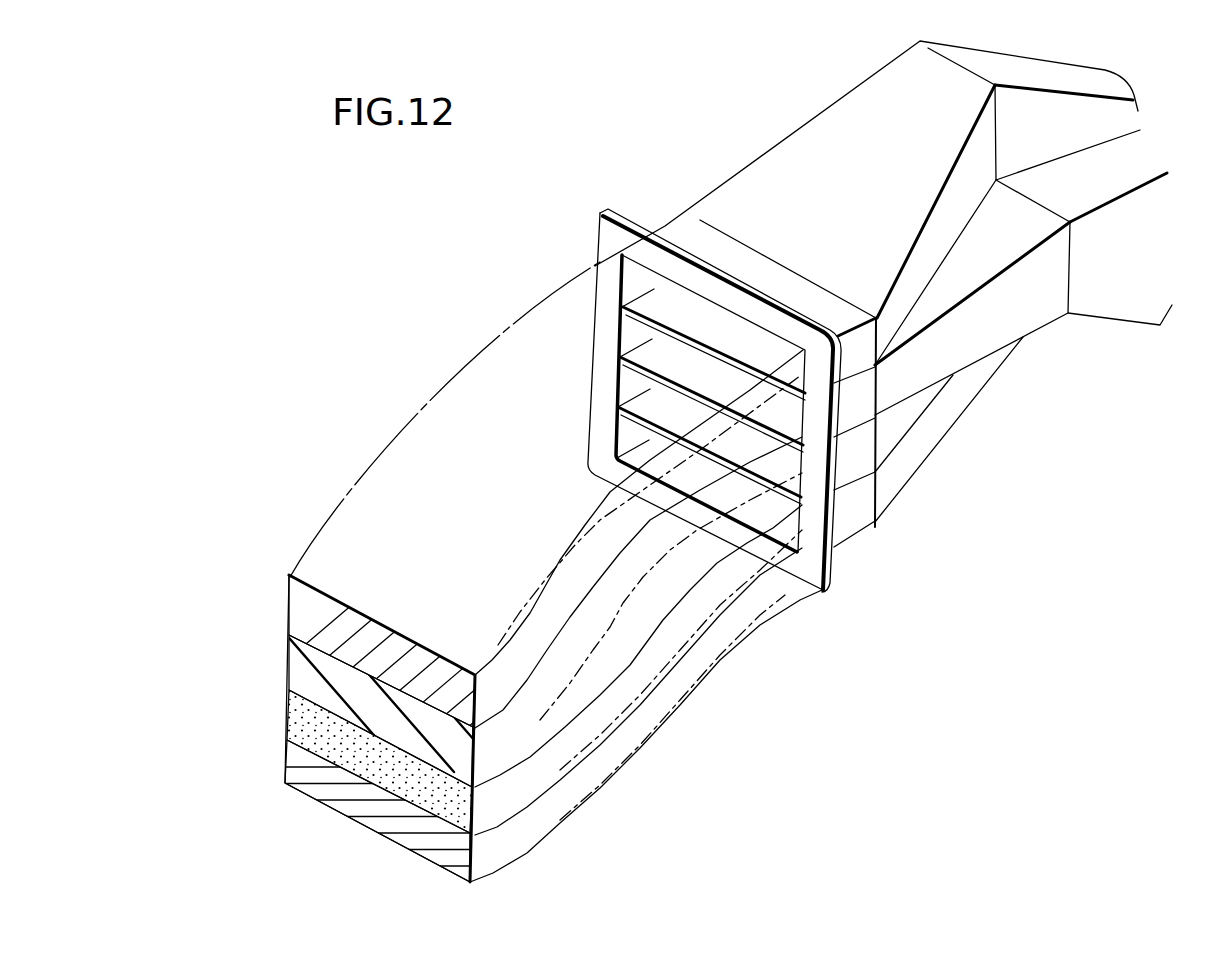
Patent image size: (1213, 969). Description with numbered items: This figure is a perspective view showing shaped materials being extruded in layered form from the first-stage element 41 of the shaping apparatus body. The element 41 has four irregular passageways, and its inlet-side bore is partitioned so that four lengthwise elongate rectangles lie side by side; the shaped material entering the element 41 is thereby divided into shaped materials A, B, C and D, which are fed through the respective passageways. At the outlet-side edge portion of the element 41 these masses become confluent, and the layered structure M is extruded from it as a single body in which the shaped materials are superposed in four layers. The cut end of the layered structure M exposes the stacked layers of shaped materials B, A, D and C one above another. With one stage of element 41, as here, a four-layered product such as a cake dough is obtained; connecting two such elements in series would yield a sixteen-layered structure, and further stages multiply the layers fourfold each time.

The element 41 is at (769, 166).
The layered structure M is at (473, 372).
The shaped material B is at (298, 607).
The shaped material A is at (298, 667).
The shaped material D is at (297, 718).
The shaped material C is at (297, 763).